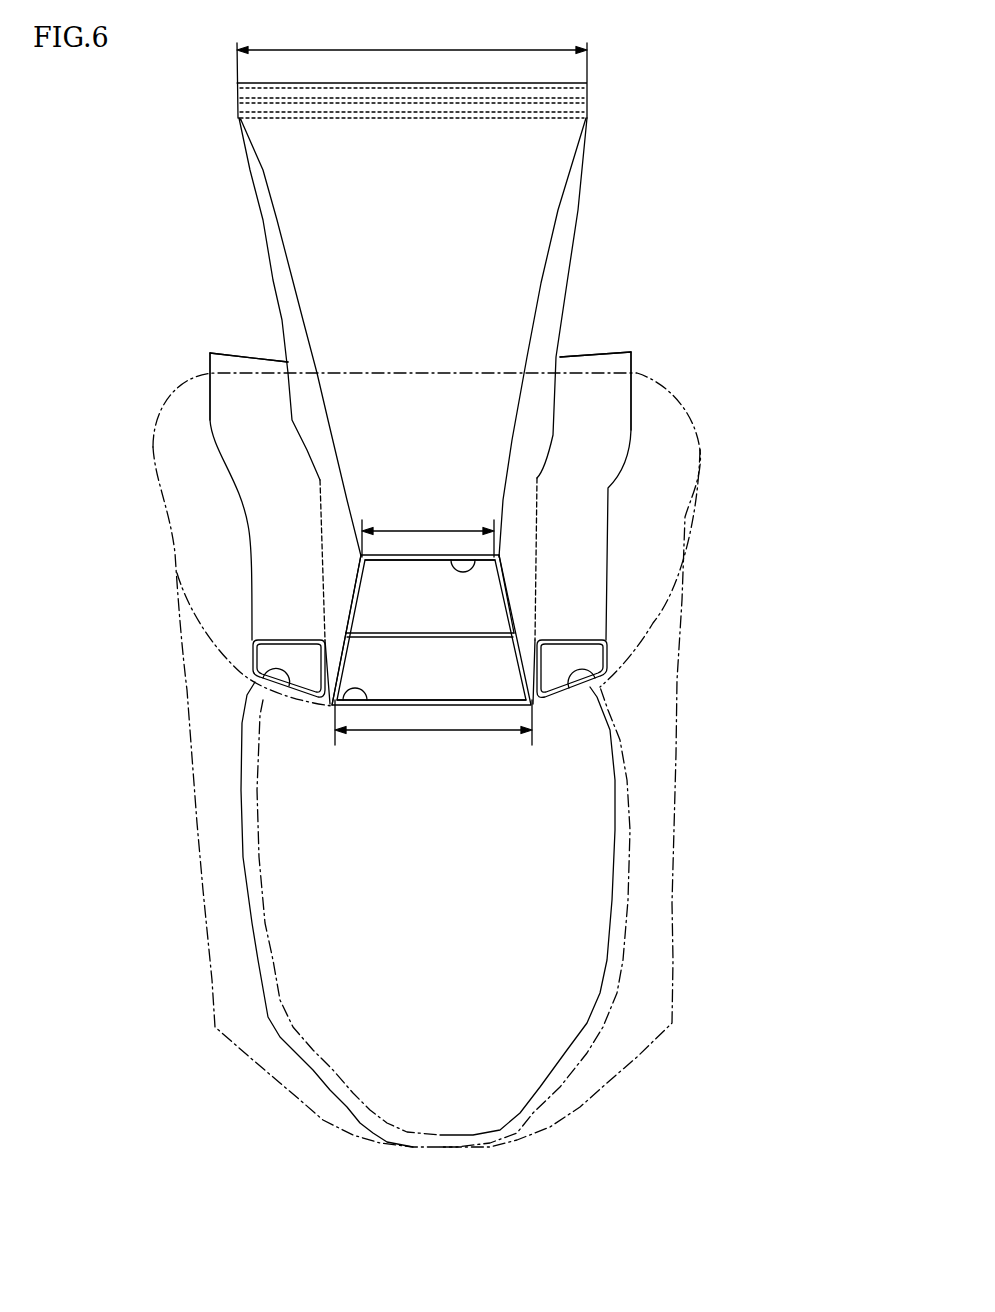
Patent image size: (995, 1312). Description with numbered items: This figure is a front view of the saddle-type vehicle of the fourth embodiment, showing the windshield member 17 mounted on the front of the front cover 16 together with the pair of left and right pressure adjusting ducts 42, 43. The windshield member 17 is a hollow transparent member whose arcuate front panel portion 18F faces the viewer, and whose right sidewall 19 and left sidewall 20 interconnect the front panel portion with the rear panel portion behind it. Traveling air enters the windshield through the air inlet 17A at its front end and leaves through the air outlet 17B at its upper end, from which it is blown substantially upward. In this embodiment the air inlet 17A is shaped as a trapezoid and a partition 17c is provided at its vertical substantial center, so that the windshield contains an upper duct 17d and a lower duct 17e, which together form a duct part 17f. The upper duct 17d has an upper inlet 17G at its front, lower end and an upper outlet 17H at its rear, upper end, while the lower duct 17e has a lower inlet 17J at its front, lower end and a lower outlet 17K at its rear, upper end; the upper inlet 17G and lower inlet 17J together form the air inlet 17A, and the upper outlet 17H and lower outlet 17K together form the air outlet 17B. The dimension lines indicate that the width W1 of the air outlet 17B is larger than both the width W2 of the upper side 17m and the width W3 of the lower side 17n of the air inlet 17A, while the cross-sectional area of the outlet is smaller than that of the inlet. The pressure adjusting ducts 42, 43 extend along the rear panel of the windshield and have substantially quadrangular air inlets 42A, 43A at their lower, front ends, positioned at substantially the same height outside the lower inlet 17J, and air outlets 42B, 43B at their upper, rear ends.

The front cover 16 is at (172, 525).
The windshield member 17 is at (270, 283).
The air inlet 17A is at (436, 642).
The air outlet 17B is at (293, 118).
The upper inlet 17G is at (500, 567).
The upper outlet 17H is at (565, 90).
The lower outlet 17K is at (565, 110).
The lower inlet 17J is at (334, 705).
The partition 17c is at (432, 632).
The upper duct 17d is at (463, 588).
The lower duct 17e is at (466, 670).
The duct part 17f is at (370, 618).
The upper side 17m is at (415, 563).
The lower side 17n is at (425, 700).
The front panel portion 18F is at (416, 196).
The right sidewall 19 is at (334, 537).
The left sidewall 20 is at (518, 510).
The pressure adjusting duct 42 is at (658, 508).
The air inlet of pressure adjusting duct 42A is at (600, 676).
The air outlet of pressure adjusting duct 42B is at (600, 352).
The pressure adjusting duct 43 is at (199, 518).
The air inlet of pressure adjusting duct 43A is at (255, 670).
The air outlet of pressure adjusting duct 43B is at (243, 355).
The width of air outlet W1 is at (412, 39).
The width of upper side W2 is at (428, 533).
The width of lower side W3 is at (433, 722).